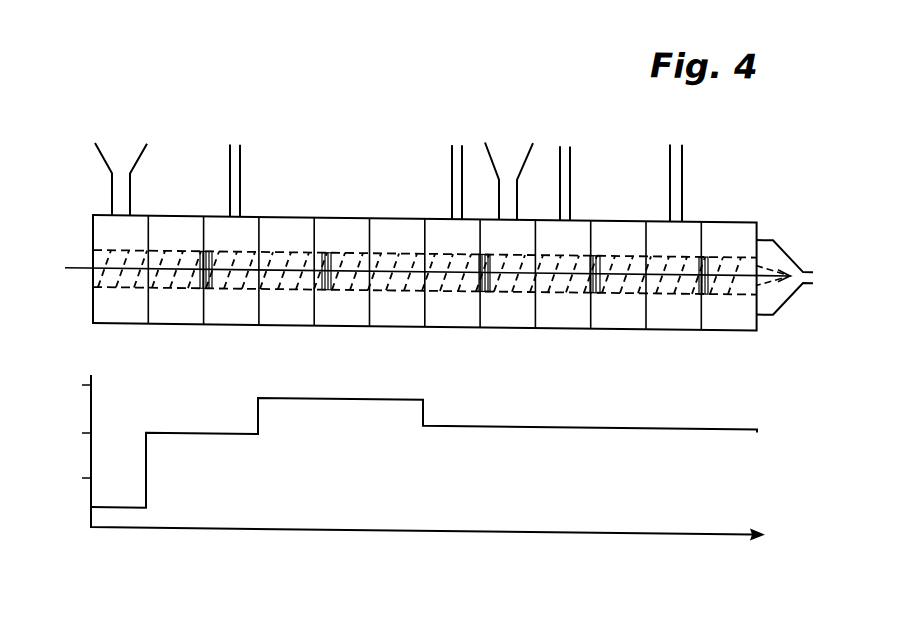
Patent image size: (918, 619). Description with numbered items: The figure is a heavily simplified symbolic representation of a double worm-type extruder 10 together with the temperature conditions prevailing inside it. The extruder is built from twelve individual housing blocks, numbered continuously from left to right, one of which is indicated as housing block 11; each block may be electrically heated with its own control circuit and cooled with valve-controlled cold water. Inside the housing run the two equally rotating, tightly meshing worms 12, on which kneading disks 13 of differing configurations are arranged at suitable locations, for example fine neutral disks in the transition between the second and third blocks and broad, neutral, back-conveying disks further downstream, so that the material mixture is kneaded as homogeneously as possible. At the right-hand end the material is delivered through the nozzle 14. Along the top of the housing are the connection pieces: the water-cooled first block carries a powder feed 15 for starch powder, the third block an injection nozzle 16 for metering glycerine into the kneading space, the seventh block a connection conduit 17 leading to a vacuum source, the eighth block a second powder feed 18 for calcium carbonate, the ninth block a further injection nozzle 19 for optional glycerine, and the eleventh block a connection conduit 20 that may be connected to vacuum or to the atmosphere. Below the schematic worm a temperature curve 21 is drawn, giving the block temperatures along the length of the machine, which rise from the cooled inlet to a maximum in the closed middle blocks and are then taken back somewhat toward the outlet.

The double worm-type extruder 10 is at (330, 85).
The housing block 11 is at (340, 224).
The worms 12 is at (277, 252).
The kneading disks 13 is at (207, 288).
The nozzle 14 is at (812, 263).
The powder feed 15 is at (125, 147).
The injection nozzle 16 is at (238, 145).
The connection conduit 17 is at (450, 143).
The powder feed 18 is at (508, 142).
The injection nozzle 19 is at (570, 141).
The connection conduit 20 is at (684, 162).
The temperature profile 21 is at (268, 496).